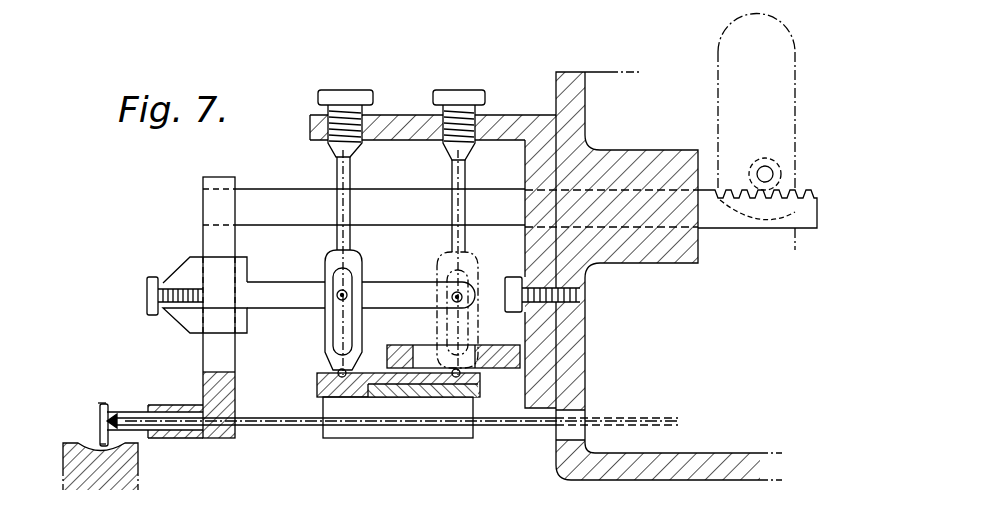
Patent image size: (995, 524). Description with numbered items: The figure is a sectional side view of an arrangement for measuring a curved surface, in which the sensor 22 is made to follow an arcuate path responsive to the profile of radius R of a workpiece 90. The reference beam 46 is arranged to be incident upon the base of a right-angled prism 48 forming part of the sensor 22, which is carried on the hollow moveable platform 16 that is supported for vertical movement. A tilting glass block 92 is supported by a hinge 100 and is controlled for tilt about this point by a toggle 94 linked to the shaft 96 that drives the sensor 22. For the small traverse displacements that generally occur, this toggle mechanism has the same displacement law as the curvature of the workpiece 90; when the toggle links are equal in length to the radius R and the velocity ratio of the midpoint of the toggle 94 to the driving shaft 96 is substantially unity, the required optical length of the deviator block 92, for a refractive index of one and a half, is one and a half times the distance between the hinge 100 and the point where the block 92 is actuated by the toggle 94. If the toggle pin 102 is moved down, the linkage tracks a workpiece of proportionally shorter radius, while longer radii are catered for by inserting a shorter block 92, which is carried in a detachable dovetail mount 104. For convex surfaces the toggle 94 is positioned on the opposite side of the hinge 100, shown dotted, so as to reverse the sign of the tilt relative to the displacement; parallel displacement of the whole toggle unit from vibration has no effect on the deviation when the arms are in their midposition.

The moveable platform 16 is at (558, 86).
The shaft 96 is at (268, 200).
The toggle 94 is at (350, 290).
The toggle pin 102 is at (336, 296).
The hinge 100 is at (390, 373).
The mount 104 is at (478, 388).
The tilting glass block 92 is at (455, 432).
The reference beam 46 is at (262, 428).
The right-angled prism 48 is at (108, 408).
The sensor 22 is at (98, 402).
The radius R is at (93, 446).
The workpiece 90 is at (128, 468).